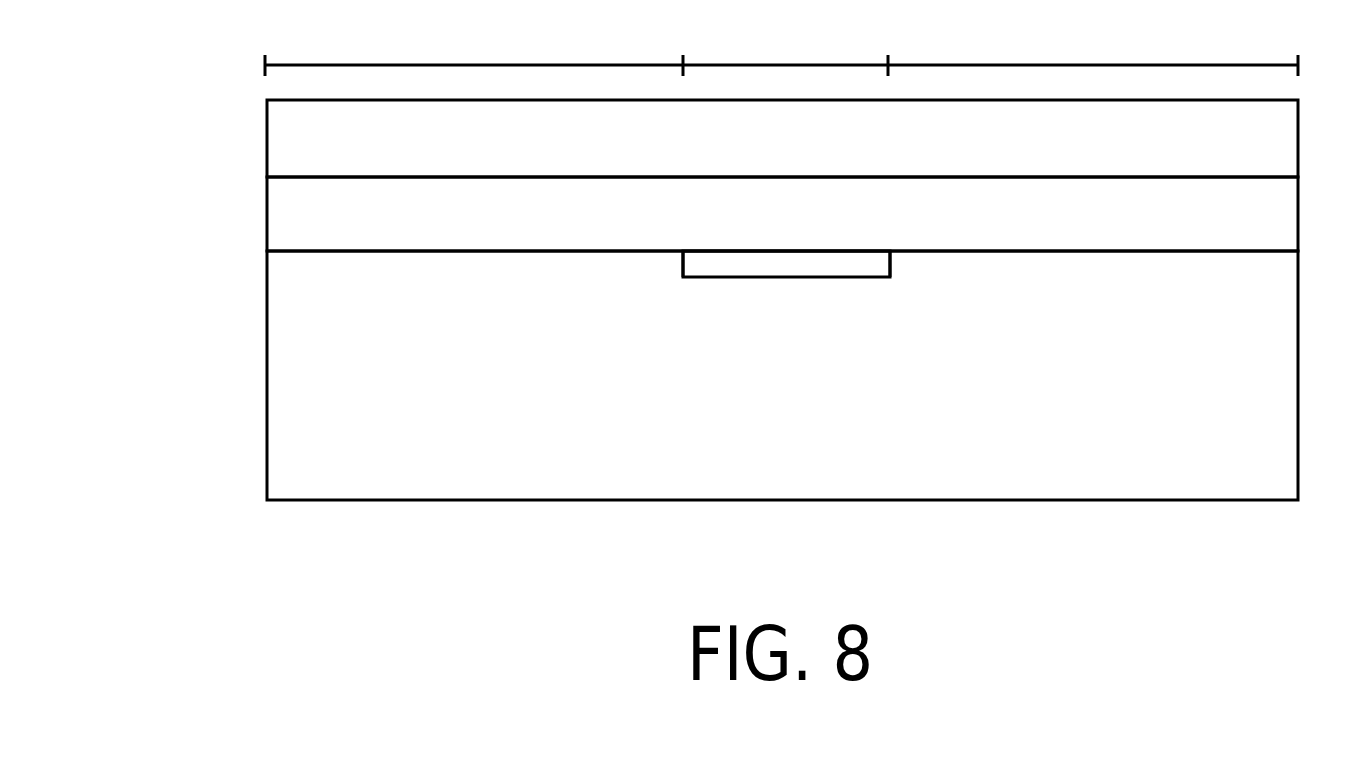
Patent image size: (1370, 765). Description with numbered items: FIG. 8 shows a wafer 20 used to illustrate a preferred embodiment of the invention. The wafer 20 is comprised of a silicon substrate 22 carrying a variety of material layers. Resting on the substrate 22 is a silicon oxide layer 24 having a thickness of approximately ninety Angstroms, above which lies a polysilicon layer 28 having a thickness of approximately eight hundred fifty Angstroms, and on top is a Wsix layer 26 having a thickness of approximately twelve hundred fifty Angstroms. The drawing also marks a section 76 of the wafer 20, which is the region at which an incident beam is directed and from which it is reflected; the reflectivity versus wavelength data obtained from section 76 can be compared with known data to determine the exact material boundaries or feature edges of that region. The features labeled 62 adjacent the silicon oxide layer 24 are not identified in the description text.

The wafer 20 is at (751, 299).
The silicon substrate 22 is at (1275, 403).
The silicon oxide layer 24 is at (762, 272).
The Wsix layer 26 is at (1275, 154).
The polysilicon layer 28 is at (1275, 223).
The side edges of component 62 is at (683, 264).
The section 76 is at (781, 45).